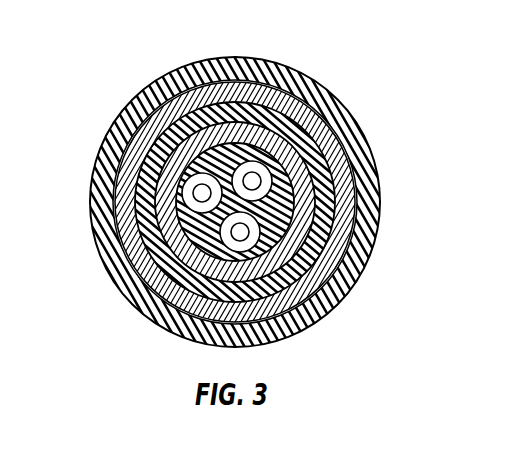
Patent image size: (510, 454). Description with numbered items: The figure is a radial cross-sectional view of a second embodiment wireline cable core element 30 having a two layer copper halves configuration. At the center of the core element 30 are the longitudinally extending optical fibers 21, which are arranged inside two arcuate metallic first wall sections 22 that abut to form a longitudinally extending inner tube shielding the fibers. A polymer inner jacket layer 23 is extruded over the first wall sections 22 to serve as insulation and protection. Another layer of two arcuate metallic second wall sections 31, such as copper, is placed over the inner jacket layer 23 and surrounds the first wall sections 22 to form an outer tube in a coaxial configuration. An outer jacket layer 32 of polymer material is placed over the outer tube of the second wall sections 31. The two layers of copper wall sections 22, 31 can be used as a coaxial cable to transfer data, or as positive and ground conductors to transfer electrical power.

The cable core element 30 is at (100, 50).
The optical fibers 21 is at (255, 182).
The first wall sections 22 is at (302, 226).
The inner jacket layer 23 is at (175, 268).
The second wall sections 31 is at (237, 100).
The outer jacket layer 32 is at (308, 93).